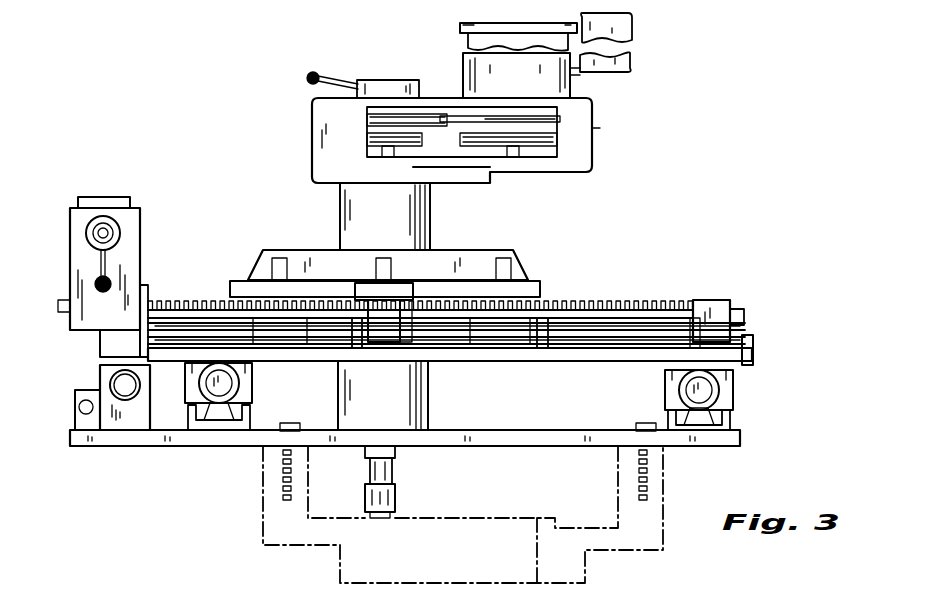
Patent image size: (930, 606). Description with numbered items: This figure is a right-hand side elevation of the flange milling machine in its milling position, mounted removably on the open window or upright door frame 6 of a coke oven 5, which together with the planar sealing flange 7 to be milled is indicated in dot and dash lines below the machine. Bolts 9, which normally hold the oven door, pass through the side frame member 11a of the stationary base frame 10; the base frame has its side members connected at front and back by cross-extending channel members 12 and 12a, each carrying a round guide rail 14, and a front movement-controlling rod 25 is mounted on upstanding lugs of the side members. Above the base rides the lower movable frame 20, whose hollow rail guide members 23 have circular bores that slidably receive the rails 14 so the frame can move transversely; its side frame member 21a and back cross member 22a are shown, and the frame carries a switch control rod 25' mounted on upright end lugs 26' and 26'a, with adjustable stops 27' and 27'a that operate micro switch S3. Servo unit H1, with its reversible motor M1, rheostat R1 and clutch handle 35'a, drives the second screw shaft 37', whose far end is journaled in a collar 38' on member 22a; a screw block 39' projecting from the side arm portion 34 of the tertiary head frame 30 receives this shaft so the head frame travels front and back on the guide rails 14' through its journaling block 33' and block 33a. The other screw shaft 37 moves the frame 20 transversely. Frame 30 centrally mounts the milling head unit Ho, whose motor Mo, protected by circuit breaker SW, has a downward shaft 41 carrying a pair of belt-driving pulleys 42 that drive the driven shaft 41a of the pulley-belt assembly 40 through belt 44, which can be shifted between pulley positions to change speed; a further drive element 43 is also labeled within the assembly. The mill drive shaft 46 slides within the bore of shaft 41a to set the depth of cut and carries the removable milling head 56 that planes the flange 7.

The coke oven 5 is at (588, 568).
The upright door frame 6 is at (664, 497).
The sealing flange 7 is at (548, 518).
The bolts 9 is at (292, 428).
The fixed base frame 10 is at (575, 432).
The side frame member 11a is at (118, 445).
The front cross-extending channel member 12 is at (250, 424).
The back cross-extending channel member 12a is at (730, 419).
The guide rail 14 is at (487, 386).
The guide rail member 14' is at (420, 292).
The lower movable frame 20 is at (500, 364).
The side frame member 21a is at (750, 338).
The back cross member 22a is at (756, 360).
The rail guide member 23 is at (188, 382).
The front cross-extending movement-controlling rod 25 is at (64, 407).
The switch control rod 25' is at (430, 355).
The upright end lug 26' is at (385, 340).
The upright end lug 26'a is at (484, 328).
The adjustable stop 27' is at (330, 355).
The adjustable stop 27'a is at (544, 355).
The tertiary head frame 30 is at (303, 254).
The journaling block 33' is at (382, 286).
The plate 33a is at (170, 4).
The side arm portion 34 is at (358, 288).
The handle 35'a is at (151, 271).
The screw shaft 37 is at (102, 392).
The second screw shaft 37' is at (595, 280).
The collar 38' is at (727, 305).
The screw block 39' is at (435, 282).
The pulley-belt assembly 40 is at (310, 142).
The motor shaft 41 is at (520, 157).
The driven shaft 41a is at (385, 154).
The belt-driving pulleys 42 is at (555, 135).
The gear 43 is at (368, 128).
The belt 44 is at (446, 116).
The mill drive shaft 46 is at (392, 470).
The milling head 56 is at (396, 500).
The servo unit H1 is at (70, 260).
The milling head unit Ho is at (592, 130).
The reversible electric motor M1 is at (99, 197).
The motor Mo is at (548, 24).
The speed control rheostat R1 is at (87, 228).
The micro switch S3 is at (385, 332).
The circuit breaker SW is at (633, 30).